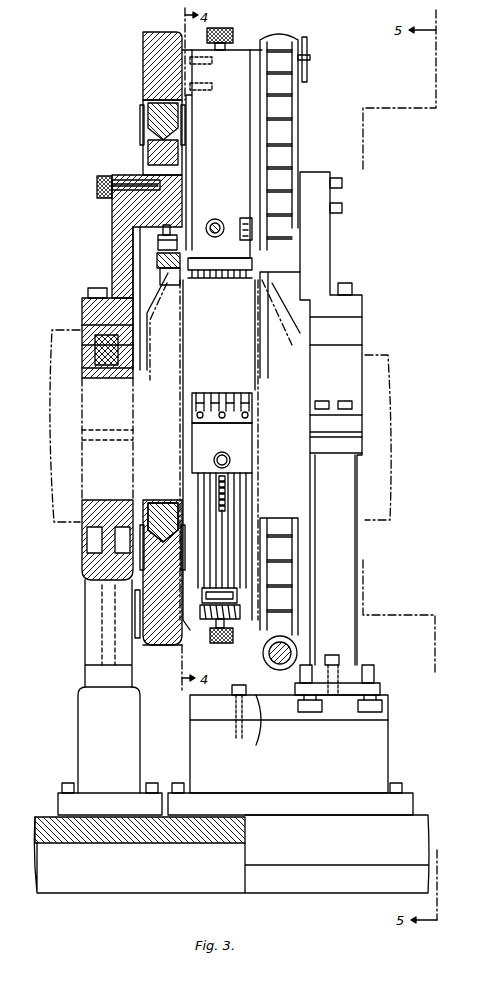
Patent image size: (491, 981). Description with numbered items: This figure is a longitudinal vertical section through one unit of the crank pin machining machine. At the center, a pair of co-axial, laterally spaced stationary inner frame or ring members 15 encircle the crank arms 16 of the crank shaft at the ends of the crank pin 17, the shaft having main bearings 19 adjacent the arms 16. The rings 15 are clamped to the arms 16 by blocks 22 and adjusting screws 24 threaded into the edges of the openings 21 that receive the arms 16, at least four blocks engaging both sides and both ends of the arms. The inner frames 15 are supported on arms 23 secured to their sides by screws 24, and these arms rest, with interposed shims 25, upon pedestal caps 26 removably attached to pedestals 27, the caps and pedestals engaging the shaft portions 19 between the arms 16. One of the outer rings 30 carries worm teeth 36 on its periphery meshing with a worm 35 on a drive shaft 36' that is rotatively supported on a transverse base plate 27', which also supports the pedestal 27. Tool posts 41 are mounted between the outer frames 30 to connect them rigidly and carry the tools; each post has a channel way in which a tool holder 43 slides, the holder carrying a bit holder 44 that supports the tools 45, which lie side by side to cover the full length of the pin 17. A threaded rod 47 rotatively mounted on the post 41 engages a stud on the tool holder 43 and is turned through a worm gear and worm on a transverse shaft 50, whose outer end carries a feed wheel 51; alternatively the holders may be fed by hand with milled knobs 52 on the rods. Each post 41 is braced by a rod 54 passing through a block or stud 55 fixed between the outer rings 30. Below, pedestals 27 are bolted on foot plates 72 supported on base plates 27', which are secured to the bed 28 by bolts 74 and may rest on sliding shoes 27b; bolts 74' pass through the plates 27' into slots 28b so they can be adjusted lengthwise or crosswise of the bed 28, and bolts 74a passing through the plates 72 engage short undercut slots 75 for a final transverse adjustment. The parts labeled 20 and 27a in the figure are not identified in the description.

The inner frame or ring members 15 is at (146, 165).
The crank arms 16 is at (398, 452).
The pin 17 is at (219, 455).
The main bearings 19 is at (107, 439).
The bolt 20 is at (160, 245).
The openings 21 is at (158, 240).
The blocks 22 is at (160, 262).
The arms 23 is at (332, 242).
The adjusting screws 24 is at (104, 210).
The shims 25 is at (90, 326).
The pedestal caps 26 is at (95, 357).
The pedestals 27 is at (84, 540).
The support column 27a is at (109, 686).
The base plate 27' is at (245, 754).
The sliding blocks or shoes 27b is at (390, 742).
The bed 28 is at (412, 835).
The slots 28b is at (236, 722).
The outer rings 30 is at (146, 36).
The worm 35 is at (266, 648).
The worm teeth 36 is at (300, 142).
The drive shaft 36' is at (301, 584).
The tool posts 41 is at (62, 603).
The tool holder 43 is at (240, 446).
The bit holder 44 is at (252, 406).
The tools 45 is at (218, 282).
The rod 47 is at (224, 512).
The transverse shaft 50 is at (160, 646).
The feed wheel 51 is at (308, 48).
The milled knobs 52 is at (228, 28).
The brace rod 54 is at (212, 220).
The block or stud 55 is at (230, 216).
The foot plates 72 is at (350, 684).
The bolts 74 is at (252, 770).
The bolts 74a is at (376, 670).
The bolts 74' is at (297, 712).
The short slots 75 is at (322, 706).